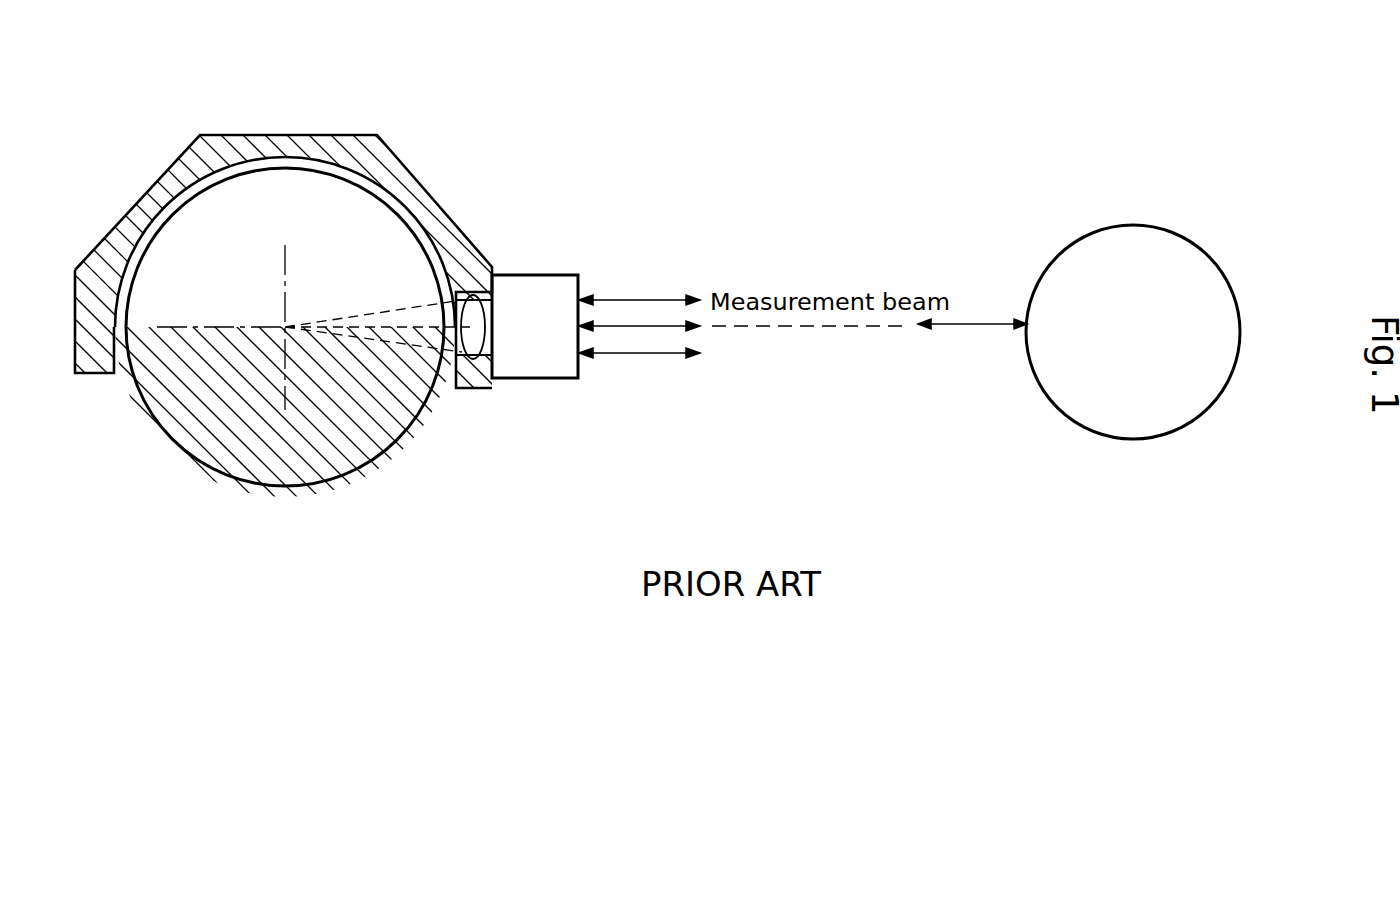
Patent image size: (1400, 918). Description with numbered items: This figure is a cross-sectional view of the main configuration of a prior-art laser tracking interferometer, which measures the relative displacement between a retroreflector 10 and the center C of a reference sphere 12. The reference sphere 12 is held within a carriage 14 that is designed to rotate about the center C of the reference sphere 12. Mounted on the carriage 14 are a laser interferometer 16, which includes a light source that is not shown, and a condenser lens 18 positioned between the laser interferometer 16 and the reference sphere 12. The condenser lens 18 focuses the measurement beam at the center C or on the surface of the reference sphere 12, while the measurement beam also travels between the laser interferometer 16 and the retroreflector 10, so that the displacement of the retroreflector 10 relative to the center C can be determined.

The retroreflector 10 is at (1133, 225).
The reference sphere 12 is at (216, 451).
The carriage 14 is at (296, 135).
The laser interferometer 16 is at (528, 287).
The condenser lens 18 is at (485, 390).